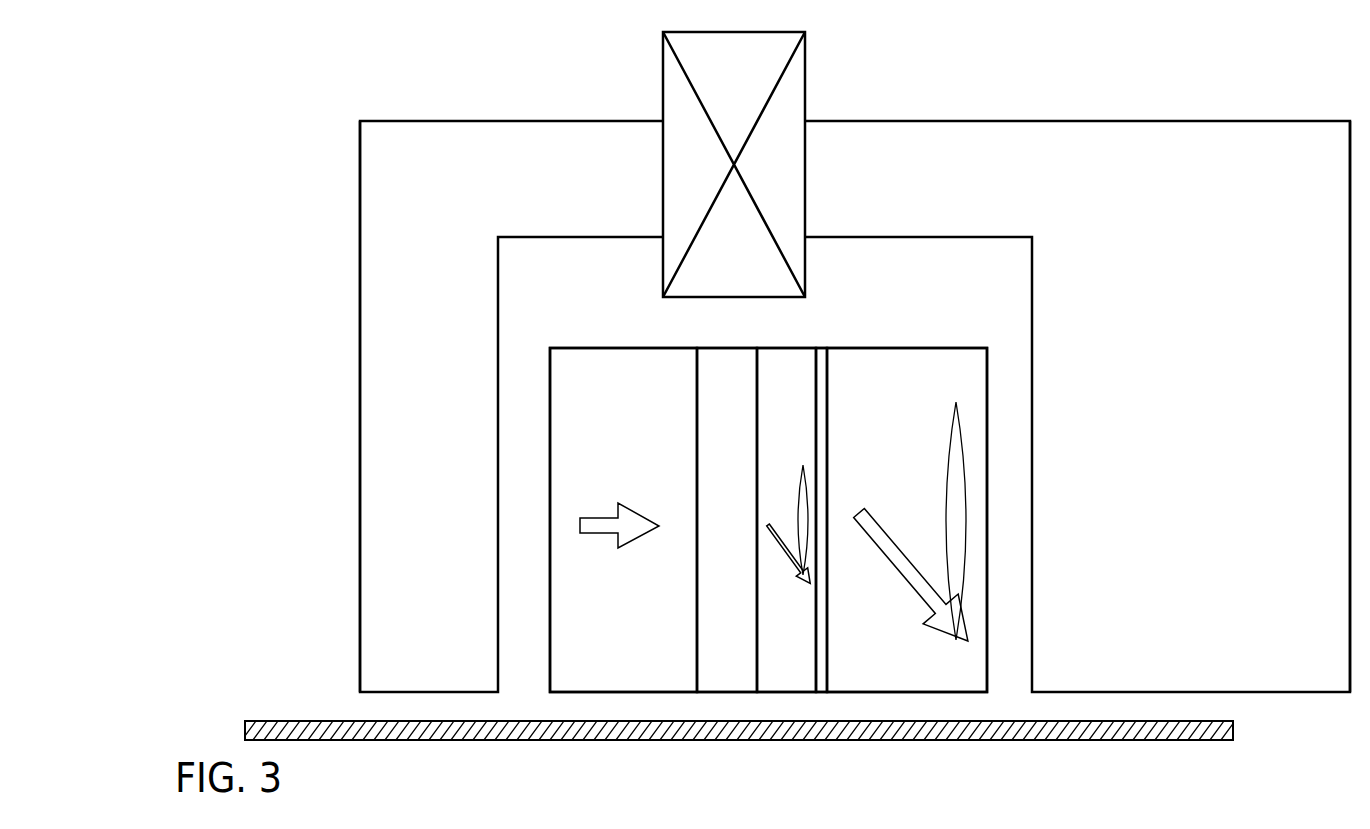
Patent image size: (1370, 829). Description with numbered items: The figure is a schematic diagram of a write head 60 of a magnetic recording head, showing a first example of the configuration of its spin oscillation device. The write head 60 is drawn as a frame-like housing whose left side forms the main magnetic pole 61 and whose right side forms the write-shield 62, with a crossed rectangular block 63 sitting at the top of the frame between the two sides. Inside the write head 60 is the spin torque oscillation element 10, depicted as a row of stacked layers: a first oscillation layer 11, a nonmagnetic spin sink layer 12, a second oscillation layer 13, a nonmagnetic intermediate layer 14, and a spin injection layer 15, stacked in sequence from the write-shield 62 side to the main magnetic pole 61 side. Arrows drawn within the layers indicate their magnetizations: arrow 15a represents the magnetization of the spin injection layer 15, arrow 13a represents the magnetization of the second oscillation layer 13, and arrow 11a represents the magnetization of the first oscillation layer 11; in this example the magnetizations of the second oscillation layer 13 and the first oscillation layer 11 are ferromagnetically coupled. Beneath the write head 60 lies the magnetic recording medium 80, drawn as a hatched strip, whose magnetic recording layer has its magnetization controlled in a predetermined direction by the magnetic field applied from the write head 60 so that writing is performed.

The spin torque oscillation element 10 is at (986, 330).
The first oscillation layer 11 is at (955, 357).
The magnetization of the first oscillation layer 11a is at (880, 553).
The nonmagnetic spin sink layer 12 is at (822, 357).
The second oscillation layer 13 is at (780, 357).
The magnetization of the second oscillation layer 13a is at (783, 548).
The nonmagnetic intermediate layer 14 is at (716, 357).
The spin injection layer 15 is at (582, 357).
The magnetization of the spin injection layer 15a is at (601, 535).
The write head 60 is at (350, 177).
The main magnetic pole 61 is at (366, 512).
The write-shield 62 is at (1339, 693).
The fan 63 is at (801, 87).
The magnetic recording medium 80 is at (1235, 732).